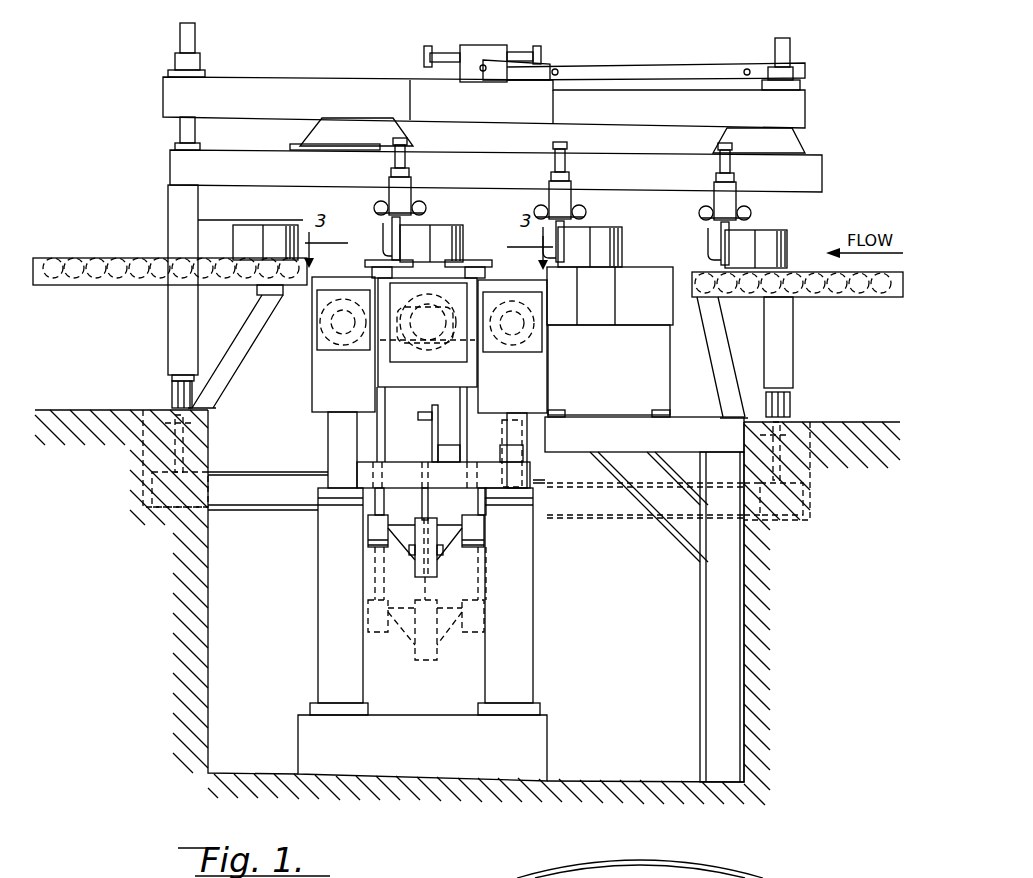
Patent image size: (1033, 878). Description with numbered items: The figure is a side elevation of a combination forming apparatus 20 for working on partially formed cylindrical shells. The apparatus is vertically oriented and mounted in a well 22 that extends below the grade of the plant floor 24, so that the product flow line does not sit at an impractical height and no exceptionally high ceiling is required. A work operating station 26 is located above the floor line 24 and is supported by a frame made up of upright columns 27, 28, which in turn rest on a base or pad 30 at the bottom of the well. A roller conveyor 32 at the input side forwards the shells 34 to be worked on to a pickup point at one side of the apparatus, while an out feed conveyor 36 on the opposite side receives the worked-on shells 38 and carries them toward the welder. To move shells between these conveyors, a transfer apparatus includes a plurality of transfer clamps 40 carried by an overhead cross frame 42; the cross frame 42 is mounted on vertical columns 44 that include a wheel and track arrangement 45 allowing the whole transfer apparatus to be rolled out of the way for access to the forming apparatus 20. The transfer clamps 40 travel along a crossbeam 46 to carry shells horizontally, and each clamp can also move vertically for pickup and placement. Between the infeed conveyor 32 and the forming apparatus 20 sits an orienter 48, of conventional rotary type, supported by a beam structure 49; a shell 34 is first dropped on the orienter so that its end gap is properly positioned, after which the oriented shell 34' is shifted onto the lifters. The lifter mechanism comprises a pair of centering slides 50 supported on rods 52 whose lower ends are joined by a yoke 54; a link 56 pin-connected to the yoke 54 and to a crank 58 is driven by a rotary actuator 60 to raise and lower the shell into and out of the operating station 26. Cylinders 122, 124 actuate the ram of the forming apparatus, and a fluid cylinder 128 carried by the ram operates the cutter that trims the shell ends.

The combination forming apparatus 20 is at (300, 420).
The well 22 is at (210, 617).
The plant floor 24 is at (68, 409).
The work operating station 26 is at (398, 305).
The upright column 27 is at (318, 665).
The upright column 28 is at (524, 659).
The base or pad 30 is at (539, 733).
The roller conveyor 32 is at (858, 297).
The shell 34 is at (777, 236).
The shell 34' is at (604, 232).
The out feed conveyor 36 is at (88, 284).
The worked-on shell 38 is at (248, 226).
The transfer clamp 40 is at (410, 190).
The overhead cross frame 42 is at (306, 85).
The vertical column 44 is at (168, 335).
The wheel and track arrangement 45 is at (176, 395).
The crossbeam 46 is at (258, 156).
The orienter 48 is at (647, 271).
The beam structure 49 is at (640, 417).
The centering slide 50 is at (373, 259).
The rod 52 is at (372, 507).
The yoke 54 is at (400, 548).
The link 56 is at (423, 498).
The crank 58 is at (440, 428).
The rotary actuator 60 is at (525, 451).
The cylinder 122 is at (318, 348).
The cylinder 124 is at (535, 349).
The fluid cylinder 128 is at (398, 358).